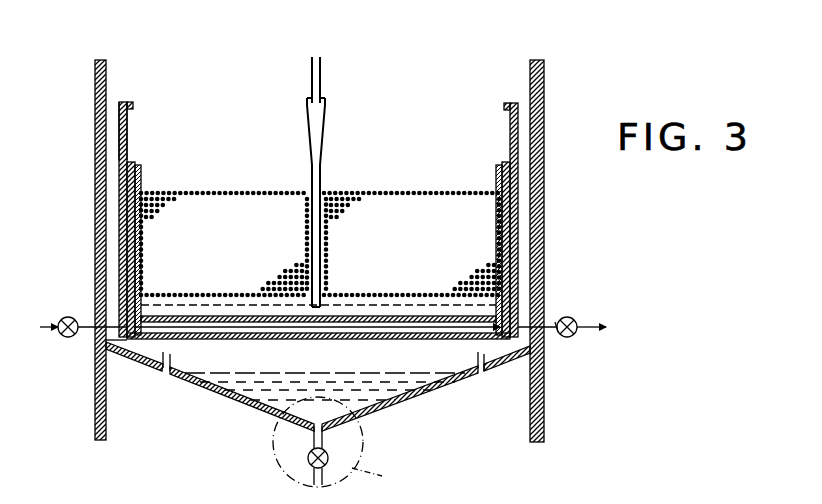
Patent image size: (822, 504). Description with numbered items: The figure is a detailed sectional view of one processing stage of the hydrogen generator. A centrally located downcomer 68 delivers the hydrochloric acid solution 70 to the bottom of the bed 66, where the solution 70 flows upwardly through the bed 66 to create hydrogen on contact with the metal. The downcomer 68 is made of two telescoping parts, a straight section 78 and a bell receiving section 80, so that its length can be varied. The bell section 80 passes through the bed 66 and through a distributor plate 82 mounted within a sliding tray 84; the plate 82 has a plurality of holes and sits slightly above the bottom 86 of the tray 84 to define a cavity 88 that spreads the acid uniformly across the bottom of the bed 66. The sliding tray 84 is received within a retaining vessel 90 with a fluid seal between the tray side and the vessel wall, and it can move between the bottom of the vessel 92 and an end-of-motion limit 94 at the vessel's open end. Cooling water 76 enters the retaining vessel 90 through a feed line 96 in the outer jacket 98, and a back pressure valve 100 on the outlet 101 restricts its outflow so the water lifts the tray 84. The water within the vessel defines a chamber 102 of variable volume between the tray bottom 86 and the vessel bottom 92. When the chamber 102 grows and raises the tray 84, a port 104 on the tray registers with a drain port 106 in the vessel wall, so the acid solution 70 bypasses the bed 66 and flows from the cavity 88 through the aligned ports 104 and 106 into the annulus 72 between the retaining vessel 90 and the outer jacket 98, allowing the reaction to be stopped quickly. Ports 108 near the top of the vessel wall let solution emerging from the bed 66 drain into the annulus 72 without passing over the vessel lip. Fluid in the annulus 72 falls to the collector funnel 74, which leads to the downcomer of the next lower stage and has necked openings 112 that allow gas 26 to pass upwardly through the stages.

The gas 26 is at (167, 383).
The bed 66 is at (312, 242).
The downcomer 68 is at (343, 100).
The hydrochloric acid solution 70 is at (316, 50).
The annulus 72 is at (525, 240).
The collector funnel 74 is at (378, 410).
The cooling water 76 is at (605, 327).
The straight section 78 is at (322, 70).
The bell receiving section 80 is at (325, 138).
The distributor plate 82 is at (398, 310).
The sliding tray 84 is at (135, 165).
The bottom of the sliding tray 86 is at (297, 320).
The cavity 88 is at (268, 320).
The retaining vessel 90 is at (127, 130).
The bottom of the vessel 92 is at (324, 336).
The end-of-motion limit 94 is at (133, 105).
The feed line 96 is at (40, 324).
The outer jacket 98 is at (545, 215).
The back pressure valve 100 is at (575, 320).
The outlet 101 is at (555, 320).
The chamber 102 is at (413, 370).
The port 104 is at (140, 342).
The drain port 106 is at (128, 252).
The ports 108 is at (125, 162).
The necked openings 112 is at (176, 352).